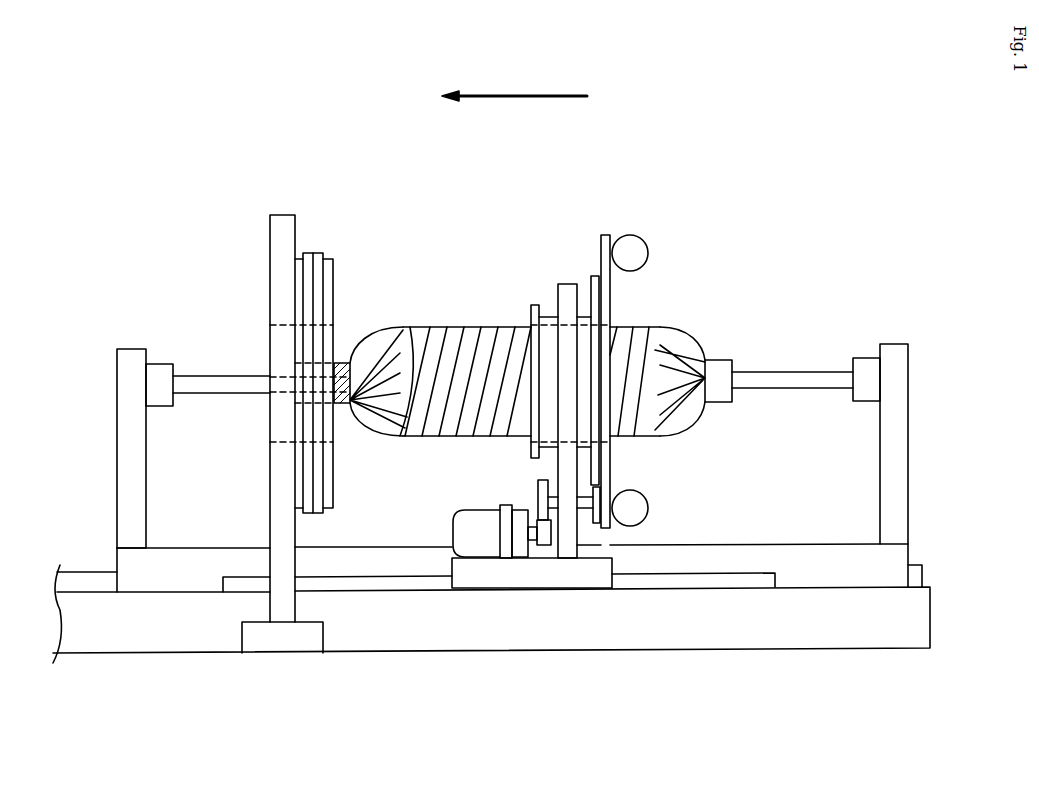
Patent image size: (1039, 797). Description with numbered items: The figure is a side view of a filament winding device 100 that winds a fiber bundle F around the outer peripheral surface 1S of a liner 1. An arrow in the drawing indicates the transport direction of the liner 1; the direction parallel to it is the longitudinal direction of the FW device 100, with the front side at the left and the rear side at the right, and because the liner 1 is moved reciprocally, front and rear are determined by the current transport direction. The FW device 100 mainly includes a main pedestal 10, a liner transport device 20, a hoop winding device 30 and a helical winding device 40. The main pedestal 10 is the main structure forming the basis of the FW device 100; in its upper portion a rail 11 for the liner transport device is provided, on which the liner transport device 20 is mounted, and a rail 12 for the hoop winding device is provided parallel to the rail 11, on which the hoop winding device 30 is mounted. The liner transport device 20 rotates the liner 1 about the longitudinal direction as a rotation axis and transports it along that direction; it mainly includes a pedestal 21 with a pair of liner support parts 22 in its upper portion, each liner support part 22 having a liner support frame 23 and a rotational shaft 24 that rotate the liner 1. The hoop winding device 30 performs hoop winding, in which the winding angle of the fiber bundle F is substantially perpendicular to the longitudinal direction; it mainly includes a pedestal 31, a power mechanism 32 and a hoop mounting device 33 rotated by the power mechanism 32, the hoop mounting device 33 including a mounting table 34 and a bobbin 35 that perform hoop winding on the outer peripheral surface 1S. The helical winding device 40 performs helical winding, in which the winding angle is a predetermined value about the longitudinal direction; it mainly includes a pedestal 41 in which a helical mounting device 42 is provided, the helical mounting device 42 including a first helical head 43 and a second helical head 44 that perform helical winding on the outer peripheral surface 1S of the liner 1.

The filament winding device 100 is at (511, 392).
The liner 1 is at (479, 283).
The outer peripheral surface 1S is at (455, 338).
The fiber bundle F is at (410, 332).
The main pedestal 10 is at (380, 655).
The rail for the liner transport device 11 is at (73, 578).
The rail for the hoop winding device 12 is at (380, 582).
The liner transport device 20 is at (84, 346).
The pedestal 21 is at (202, 553).
The liner support part 22 is at (131, 336).
The liner support frame 23 is at (120, 412).
The rotational shaft 24 is at (217, 375).
The hoop winding device 30 is at (562, 182).
The pedestal 31 is at (558, 285).
The power mechanism 32 is at (460, 489).
The hoop mounting device 33 is at (614, 208).
The mounting table 34 is at (603, 253).
The bobbin 35 is at (645, 253).
The helical winding device 40 is at (294, 173).
The pedestal 41 is at (270, 220).
The helical mounting device 42 is at (328, 207).
The first helical head 43 is at (322, 252).
The second helical head 44 is at (309, 253).